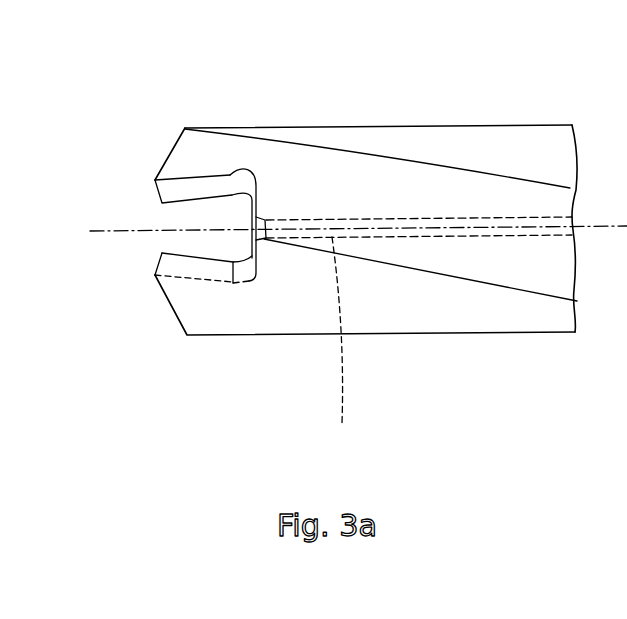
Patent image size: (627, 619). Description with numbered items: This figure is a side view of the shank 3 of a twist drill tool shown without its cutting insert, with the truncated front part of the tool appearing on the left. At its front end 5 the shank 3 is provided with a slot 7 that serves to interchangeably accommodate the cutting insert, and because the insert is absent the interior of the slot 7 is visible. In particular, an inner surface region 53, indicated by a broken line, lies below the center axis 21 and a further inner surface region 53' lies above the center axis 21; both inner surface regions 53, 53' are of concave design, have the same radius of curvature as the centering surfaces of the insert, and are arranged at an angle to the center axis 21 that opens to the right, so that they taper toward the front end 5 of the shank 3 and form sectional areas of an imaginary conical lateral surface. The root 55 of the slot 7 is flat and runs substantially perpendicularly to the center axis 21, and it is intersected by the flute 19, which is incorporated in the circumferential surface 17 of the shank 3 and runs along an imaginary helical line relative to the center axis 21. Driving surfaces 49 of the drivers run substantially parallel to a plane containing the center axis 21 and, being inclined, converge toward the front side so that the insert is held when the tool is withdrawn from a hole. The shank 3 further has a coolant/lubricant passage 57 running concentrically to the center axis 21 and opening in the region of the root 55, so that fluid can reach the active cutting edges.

The shank 3 is at (425, 126).
The front end 5 is at (163, 173).
The slot 7 is at (148, 242).
The circumferential surface 17 is at (527, 125).
The flute 19 is at (374, 196).
The center axis 21 is at (110, 229).
The driving surface 49 is at (616, 190).
The inner surface region 53 is at (156, 306).
The inner surface region 53' is at (146, 163).
The root 55 is at (253, 233).
The coolant/lubricant passage 57 is at (343, 340).